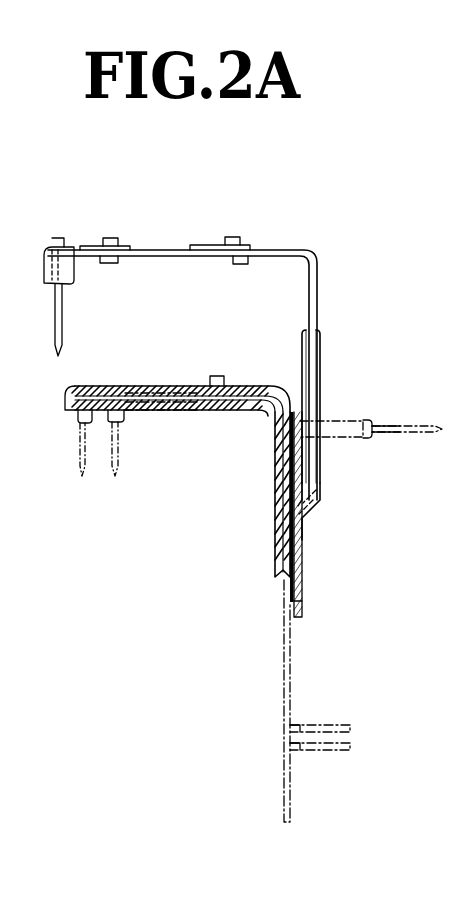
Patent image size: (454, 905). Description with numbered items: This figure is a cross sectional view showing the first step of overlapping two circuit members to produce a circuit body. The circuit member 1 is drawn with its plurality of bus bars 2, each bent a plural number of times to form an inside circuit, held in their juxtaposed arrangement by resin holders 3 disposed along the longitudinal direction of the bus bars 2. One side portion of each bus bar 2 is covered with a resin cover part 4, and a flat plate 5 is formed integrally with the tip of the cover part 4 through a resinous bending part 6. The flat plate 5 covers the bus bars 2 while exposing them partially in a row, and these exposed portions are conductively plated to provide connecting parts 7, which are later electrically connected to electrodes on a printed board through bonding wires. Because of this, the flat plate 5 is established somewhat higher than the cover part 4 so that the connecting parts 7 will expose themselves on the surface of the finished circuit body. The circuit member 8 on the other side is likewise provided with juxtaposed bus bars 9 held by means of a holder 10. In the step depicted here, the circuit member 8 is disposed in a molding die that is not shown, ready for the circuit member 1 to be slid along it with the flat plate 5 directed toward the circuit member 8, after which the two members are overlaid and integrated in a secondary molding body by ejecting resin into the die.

The circuit member 1 is at (263, 237).
The bus bars 2 is at (318, 258).
The holders 3 is at (102, 246).
The cover part 4 is at (322, 375).
The flat plate 5 is at (303, 580).
The bending part 6 is at (317, 500).
The connecting parts 7 is at (291, 553).
The circuit member 8 is at (197, 383).
The bus bars 9 is at (150, 398).
The holder 10 is at (278, 522).